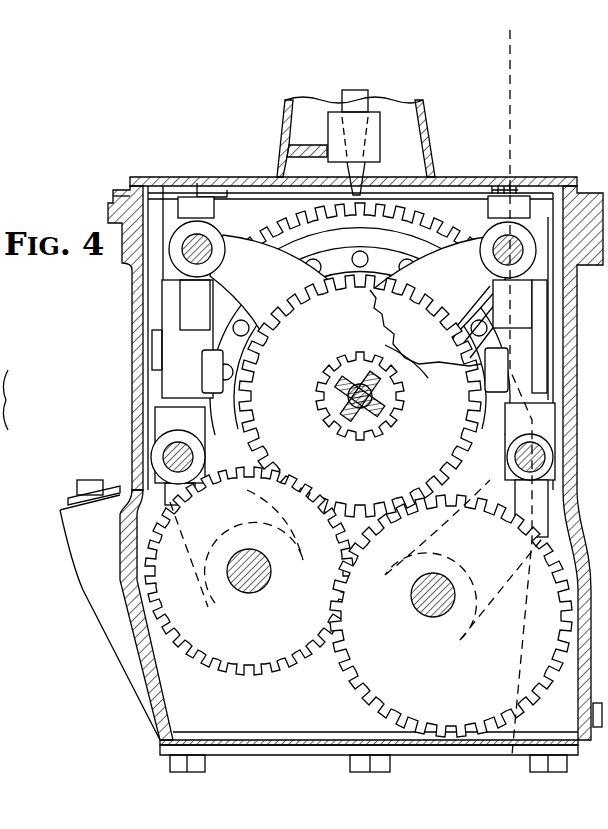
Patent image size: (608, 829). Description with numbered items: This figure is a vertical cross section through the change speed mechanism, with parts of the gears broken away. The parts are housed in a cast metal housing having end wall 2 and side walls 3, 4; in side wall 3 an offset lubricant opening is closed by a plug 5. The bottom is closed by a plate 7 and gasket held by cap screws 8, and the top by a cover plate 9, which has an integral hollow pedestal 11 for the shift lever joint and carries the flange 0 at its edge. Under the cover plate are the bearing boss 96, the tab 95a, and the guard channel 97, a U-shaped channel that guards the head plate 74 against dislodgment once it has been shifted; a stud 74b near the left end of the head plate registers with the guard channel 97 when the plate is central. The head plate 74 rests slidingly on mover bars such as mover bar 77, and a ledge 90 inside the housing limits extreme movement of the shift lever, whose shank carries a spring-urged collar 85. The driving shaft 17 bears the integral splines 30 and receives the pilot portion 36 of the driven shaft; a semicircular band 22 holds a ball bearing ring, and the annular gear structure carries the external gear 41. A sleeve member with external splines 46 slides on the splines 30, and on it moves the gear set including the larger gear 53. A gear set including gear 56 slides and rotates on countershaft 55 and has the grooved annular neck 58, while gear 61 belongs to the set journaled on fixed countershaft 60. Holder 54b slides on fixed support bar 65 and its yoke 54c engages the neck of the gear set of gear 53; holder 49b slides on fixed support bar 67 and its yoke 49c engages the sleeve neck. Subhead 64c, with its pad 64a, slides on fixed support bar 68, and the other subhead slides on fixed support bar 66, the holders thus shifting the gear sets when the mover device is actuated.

The end wall 2 is at (173, 685).
The side wall 3 is at (130, 340).
The side wall 4 is at (577, 487).
The plug 5 is at (77, 485).
The plate 7 is at (170, 402).
The cap screws 8 is at (517, 399).
The cover plate 9 is at (545, 176).
The housing flange 0 is at (118, 190).
The hollow pedestal 11 is at (285, 105).
The driving shaft 17 is at (5, 340).
The semicircular band 22 is at (402, 227).
The splines 30 is at (338, 417).
The pilot portion 36 is at (352, 368).
The external gear 41 is at (383, 217).
The external splines 46 is at (412, 422).
The holder 49b is at (273, 245).
The yoke 49c is at (290, 241).
The gear 53 is at (378, 490).
The holder 54b is at (488, 237).
The yoke 54c is at (415, 250).
The countershaft 55 is at (420, 620).
The gear 56 is at (380, 692).
The grooved annular neck 58 is at (505, 440).
The fixed countershaft 60 is at (253, 593).
The gear 61 is at (237, 648).
The lever pad 64a is at (212, 465).
The subhead 64c is at (153, 427).
The fixed support bar 65 is at (523, 250).
The fixed support bar 66 is at (543, 457).
The fixed support bar 67 is at (168, 270).
The fixed support bar 68 is at (172, 458).
The head plate 74 is at (293, 198).
The stud 74b is at (509, 207).
The mover bar 77 is at (212, 205).
The collar 85 is at (381, 120).
The ledge 90 is at (303, 153).
The bearing boss 96 is at (203, 187).
The guard channel 97 is at (487, 175).
The tab 95a is at (530, 173).